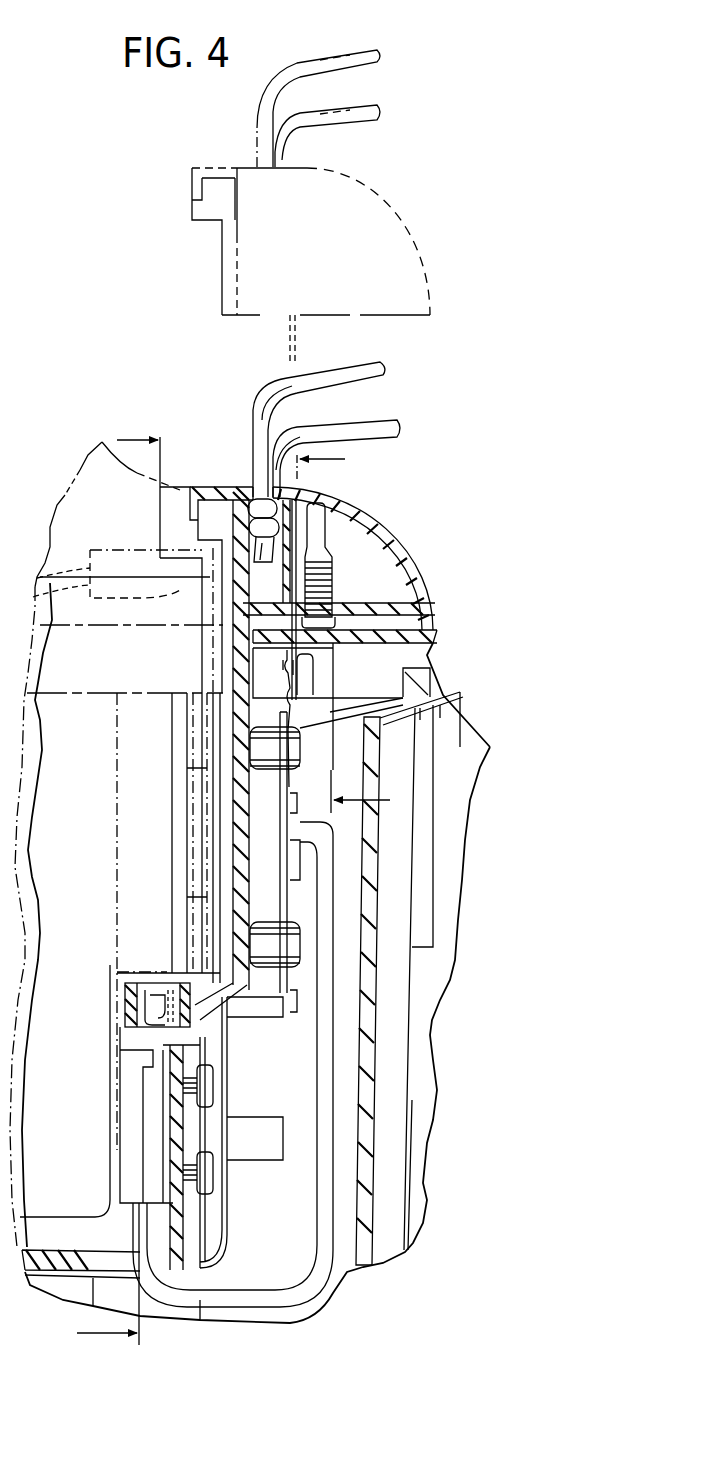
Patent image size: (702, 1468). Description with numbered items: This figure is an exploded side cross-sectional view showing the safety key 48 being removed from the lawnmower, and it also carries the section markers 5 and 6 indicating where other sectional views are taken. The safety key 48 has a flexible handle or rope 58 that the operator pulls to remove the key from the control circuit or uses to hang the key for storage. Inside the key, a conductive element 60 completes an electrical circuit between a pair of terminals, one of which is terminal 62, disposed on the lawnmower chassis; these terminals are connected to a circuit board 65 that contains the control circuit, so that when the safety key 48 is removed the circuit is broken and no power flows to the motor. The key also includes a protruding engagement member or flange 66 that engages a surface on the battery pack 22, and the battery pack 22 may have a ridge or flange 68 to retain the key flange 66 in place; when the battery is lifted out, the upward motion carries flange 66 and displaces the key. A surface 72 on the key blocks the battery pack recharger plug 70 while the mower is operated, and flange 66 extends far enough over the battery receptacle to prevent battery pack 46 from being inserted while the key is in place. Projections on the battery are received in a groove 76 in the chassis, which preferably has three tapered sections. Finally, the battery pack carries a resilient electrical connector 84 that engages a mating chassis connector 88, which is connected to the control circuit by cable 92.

The battery pack 22 is at (85, 958).
The battery pack 46 is at (78, 483).
The safety key 48 is at (363, 217).
The flexible handle or rope 58 is at (353, 53).
The conductive element 60 is at (287, 651).
The terminal 62 is at (287, 680).
The circuit board 65 is at (283, 910).
The engagement member or flange 66 is at (197, 188).
The ridge or flange 68 is at (203, 533).
The battery pack recharger plug 70 is at (183, 590).
The surface 72 is at (226, 272).
The groove 76 is at (181, 842).
The electrical connector 84 is at (168, 987).
The connector 88 is at (147, 1010).
The cable 92 is at (238, 1292).
The section line 5- 5 is at (128, 890).
The section line 6- 6 is at (343, 630).